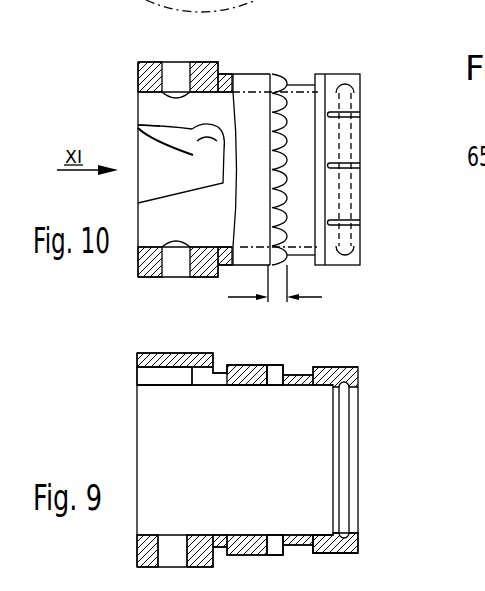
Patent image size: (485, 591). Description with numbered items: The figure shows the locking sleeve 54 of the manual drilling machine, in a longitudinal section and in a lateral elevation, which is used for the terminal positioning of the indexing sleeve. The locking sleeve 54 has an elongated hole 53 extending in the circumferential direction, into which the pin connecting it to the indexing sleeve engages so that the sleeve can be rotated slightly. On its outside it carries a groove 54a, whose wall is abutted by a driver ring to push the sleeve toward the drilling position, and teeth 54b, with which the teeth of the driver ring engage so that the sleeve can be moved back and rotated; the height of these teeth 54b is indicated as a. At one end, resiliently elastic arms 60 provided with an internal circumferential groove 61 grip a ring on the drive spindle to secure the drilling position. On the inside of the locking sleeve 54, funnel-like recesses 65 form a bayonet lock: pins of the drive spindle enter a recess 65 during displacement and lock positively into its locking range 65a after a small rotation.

In FIG. 10, the elongated hole 53 is at (181, 72).
In FIG. 10, the locking sleeve 54 is at (160, 107).
In FIG. 9, the locking sleeve 54 is at (248, 378).
In FIG. 10, the groove 54a is at (299, 257).
In FIG. 10, the teeth 54b is at (289, 117).
In FIG. 9, the teeth 54b is at (277, 365).
In FIG. 10, the resiliently elastic arms 60 is at (360, 131).
In FIG. 9, the resiliently elastic arms 60 is at (353, 547).
In FIG. 9, the internal circumferential groove 61 is at (338, 493).
In FIG. 10, the recesses 65 is at (138, 198).
In FIG. 9, the recesses 65 is at (162, 376).
In FIG. 10, the locking range 65a is at (138, 124).